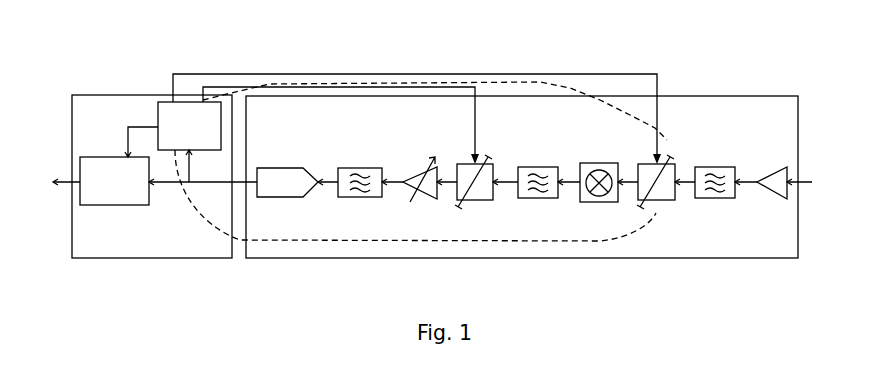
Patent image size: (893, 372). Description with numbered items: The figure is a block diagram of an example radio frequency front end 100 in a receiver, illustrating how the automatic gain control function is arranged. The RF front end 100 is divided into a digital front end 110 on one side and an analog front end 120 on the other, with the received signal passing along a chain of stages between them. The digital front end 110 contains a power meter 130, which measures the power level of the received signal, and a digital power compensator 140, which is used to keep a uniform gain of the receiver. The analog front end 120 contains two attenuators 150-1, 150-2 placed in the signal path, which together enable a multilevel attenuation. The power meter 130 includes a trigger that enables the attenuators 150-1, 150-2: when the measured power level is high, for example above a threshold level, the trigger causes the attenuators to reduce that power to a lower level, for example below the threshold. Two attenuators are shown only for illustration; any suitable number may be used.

The RF front end 100 is at (214, 28).
The digital front end 110 is at (113, 95).
The analog front end 120 is at (717, 96).
The power meter 130 is at (168, 101).
The digital power compensator 140 is at (150, 198).
The attenuator 150-1 is at (494, 167).
The attenuator 150-2 is at (676, 167).